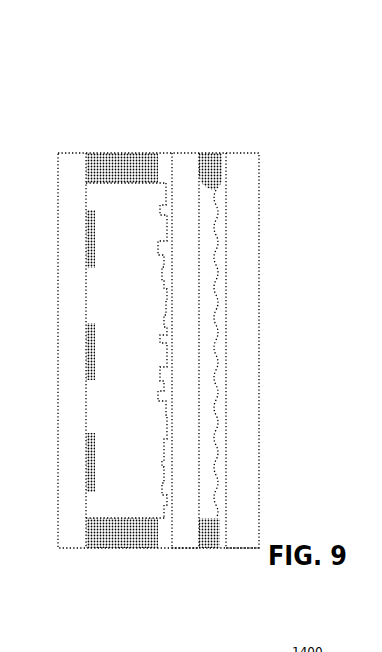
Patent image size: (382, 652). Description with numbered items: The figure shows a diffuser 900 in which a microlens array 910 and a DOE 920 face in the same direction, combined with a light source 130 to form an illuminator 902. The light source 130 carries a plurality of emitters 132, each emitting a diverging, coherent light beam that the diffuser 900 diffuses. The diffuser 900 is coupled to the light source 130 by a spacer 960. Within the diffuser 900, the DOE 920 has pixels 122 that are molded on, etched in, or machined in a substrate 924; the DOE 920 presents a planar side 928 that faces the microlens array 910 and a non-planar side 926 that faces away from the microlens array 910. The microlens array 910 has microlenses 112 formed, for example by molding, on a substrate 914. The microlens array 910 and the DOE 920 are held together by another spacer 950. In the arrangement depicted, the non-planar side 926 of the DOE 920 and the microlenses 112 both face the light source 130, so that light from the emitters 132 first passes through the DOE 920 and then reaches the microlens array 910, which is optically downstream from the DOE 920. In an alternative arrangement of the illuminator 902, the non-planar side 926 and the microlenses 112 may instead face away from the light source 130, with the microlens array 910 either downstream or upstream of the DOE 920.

The illuminator 902 is at (88, 68).
The diffuser 900 is at (263, 64).
The DOE 920 is at (178, 145).
The microlens array 910 is at (238, 145).
The microlenses 112 is at (216, 190).
The light source 130 is at (80, 152).
The pixels 122 is at (160, 262).
The non-planar side 926 is at (150, 342).
The emitters 132 is at (97, 350).
The planar side 928 is at (200, 307).
The spacer 960 is at (111, 548).
The substrate 924 is at (178, 548).
The spacer 950 is at (215, 548).
The substrate 914 is at (238, 548).